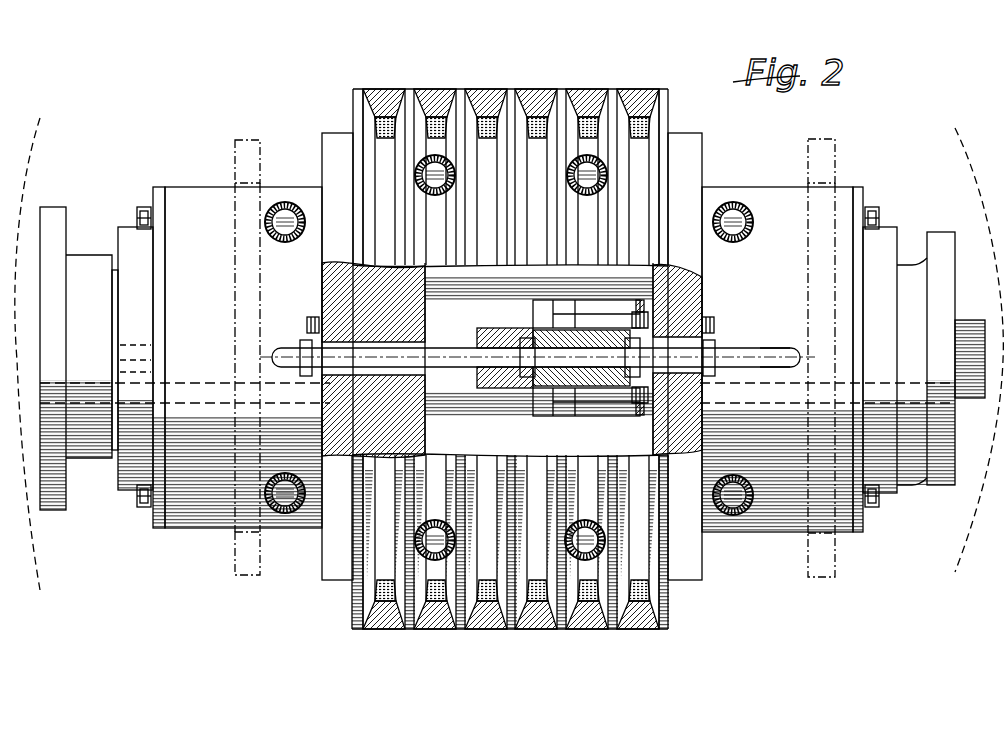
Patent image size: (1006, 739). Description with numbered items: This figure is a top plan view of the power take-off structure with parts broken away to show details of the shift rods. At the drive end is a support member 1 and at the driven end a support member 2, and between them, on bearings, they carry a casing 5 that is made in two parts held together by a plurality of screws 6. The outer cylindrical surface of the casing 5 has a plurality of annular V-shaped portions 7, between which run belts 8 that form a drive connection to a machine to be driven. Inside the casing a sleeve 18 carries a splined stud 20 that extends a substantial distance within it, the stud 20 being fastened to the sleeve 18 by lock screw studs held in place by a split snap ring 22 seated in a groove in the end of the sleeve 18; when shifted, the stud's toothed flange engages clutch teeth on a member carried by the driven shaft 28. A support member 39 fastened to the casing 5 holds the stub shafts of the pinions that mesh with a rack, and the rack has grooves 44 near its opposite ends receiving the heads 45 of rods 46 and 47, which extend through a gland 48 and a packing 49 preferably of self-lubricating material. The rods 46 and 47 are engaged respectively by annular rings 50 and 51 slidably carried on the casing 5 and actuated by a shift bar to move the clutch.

The support member 1 is at (68, 207).
The support member 2 is at (934, 232).
The casing 5 is at (338, 144).
The screws 6 is at (423, 184).
The annular V-shaped portions 7 is at (378, 173).
The belts 8 is at (437, 92).
The sleeve 18 is at (430, 415).
The splined stud 20 is at (583, 416).
The split snap ring 22 is at (540, 388).
The driven shaft 28 is at (972, 320).
The support member 39 is at (480, 328).
The grooves 44 is at (637, 405).
The heads 45 is at (524, 338).
The rod 46 is at (272, 362).
The rod 47 is at (773, 350).
The gland 48 is at (306, 326).
The packing 49 is at (300, 377).
The annular ring 50 is at (235, 145).
The annular ring 51 is at (808, 156).